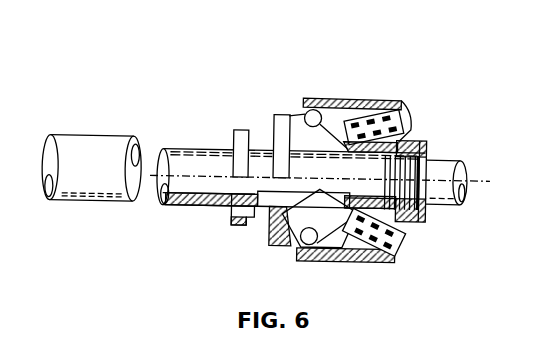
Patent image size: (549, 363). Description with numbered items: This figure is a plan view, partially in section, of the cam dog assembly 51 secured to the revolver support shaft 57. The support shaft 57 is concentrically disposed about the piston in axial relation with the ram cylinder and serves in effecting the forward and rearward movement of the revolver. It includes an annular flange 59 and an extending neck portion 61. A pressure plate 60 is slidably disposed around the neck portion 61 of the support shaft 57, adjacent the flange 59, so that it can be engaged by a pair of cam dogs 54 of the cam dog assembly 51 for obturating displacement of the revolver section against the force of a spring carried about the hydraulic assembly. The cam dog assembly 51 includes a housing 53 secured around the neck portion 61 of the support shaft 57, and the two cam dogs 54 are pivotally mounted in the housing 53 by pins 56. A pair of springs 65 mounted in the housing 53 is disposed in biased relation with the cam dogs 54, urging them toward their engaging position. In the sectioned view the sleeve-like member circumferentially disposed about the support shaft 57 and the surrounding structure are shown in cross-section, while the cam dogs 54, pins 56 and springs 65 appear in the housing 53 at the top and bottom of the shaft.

The cam dog assembly 51 is at (352, 88).
The housing 53 is at (362, 261).
The cam dogs 54 is at (297, 243).
The pins 56 is at (312, 109).
The revolver support shaft 57 is at (194, 204).
The annular flange 59 is at (238, 130).
The pressure plate 60 is at (280, 114).
The neck portion 61 is at (258, 220).
The springs 65 is at (380, 107).